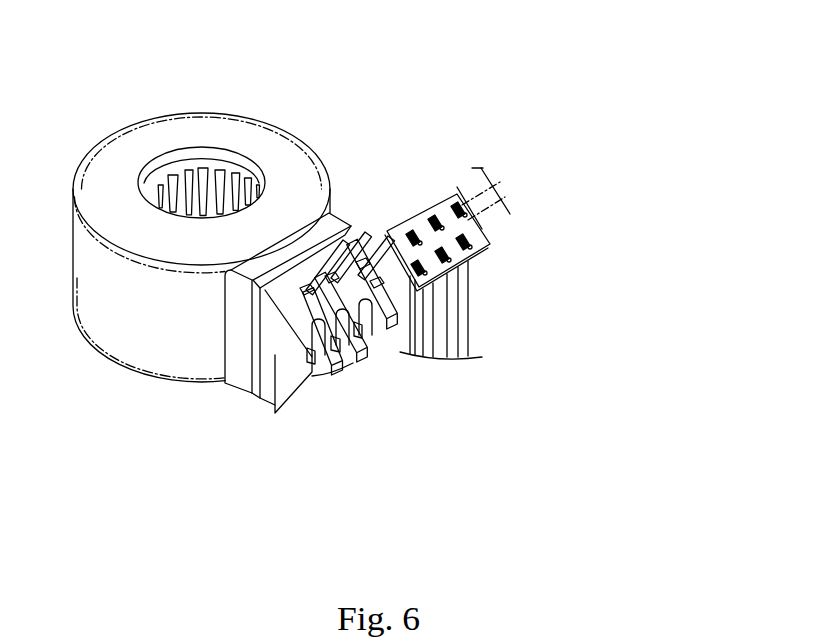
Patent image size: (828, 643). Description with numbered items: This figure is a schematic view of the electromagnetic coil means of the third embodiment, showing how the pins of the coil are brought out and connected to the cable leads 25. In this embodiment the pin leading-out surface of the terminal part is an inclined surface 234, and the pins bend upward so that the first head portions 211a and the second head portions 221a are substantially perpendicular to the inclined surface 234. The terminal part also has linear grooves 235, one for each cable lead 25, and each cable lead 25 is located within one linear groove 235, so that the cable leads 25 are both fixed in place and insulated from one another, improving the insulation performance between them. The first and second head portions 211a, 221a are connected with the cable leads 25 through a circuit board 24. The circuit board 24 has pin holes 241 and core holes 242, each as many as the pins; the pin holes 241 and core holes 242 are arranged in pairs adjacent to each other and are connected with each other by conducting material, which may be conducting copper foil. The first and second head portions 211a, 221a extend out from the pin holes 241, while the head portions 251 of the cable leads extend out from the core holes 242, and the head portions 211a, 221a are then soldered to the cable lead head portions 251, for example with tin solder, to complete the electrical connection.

The first head portion 211a is at (376, 283).
The second head portion 221a is at (350, 302).
The inclined surface 234 is at (284, 300).
The linear groove 235 is at (320, 336).
The circuit board 24 is at (460, 258).
The pin hole 241 is at (470, 193).
The core hole 242 is at (448, 230).
The cable lead head portion 251 is at (465, 217).
The cable lead 25 is at (463, 288).